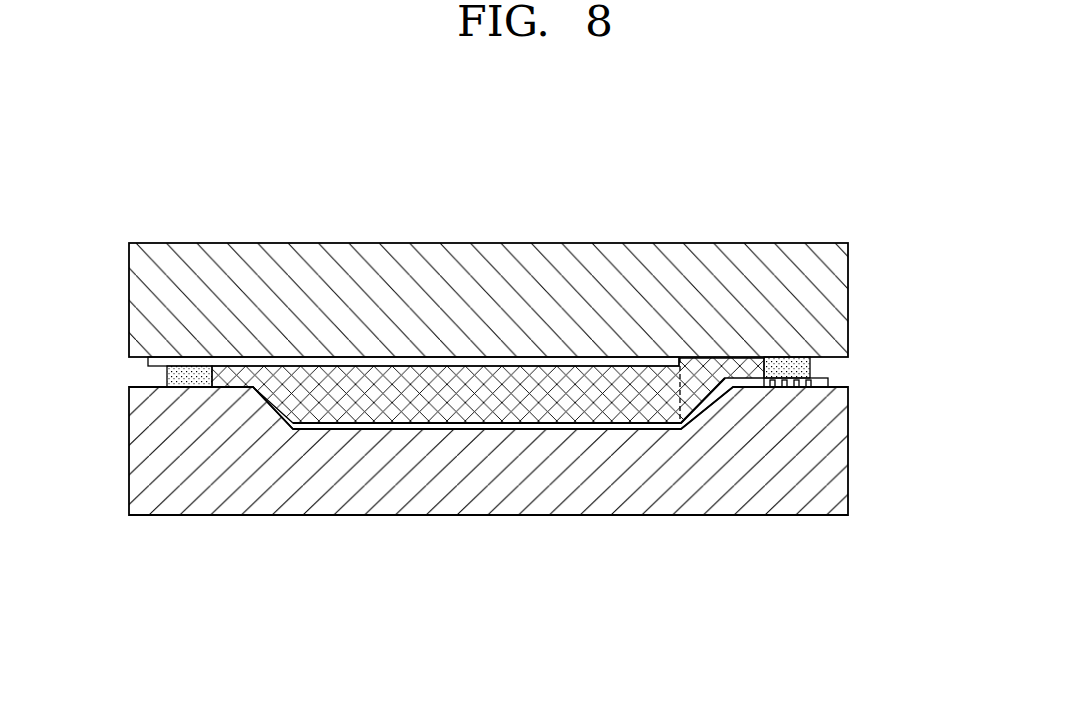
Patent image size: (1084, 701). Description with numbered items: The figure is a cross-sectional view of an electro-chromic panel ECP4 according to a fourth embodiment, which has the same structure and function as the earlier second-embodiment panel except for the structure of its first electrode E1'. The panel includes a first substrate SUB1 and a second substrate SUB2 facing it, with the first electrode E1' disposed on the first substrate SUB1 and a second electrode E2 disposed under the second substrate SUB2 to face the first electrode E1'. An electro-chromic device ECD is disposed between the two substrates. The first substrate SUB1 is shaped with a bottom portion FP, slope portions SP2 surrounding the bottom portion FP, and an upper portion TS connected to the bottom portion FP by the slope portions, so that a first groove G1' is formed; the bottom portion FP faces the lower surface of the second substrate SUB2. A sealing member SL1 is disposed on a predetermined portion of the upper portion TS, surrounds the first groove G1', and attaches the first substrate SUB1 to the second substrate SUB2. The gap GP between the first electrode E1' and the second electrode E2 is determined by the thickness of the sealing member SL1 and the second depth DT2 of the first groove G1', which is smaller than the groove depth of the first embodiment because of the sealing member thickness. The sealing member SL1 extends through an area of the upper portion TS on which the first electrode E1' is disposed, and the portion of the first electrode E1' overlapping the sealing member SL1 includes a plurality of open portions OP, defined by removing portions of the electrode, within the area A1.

The second substrate SUB2 is at (822, 300).
The first substrate SUB1 is at (832, 460).
The second electrode E2 is at (540, 360).
The first electrode E1' is at (509, 486).
The electro-chromic device ECD is at (450, 405).
The sealing member SL1 is at (165, 372).
The upper portion TS is at (830, 379).
The open portions OP is at (772, 388).
The second slope portion SP2 is at (268, 408).
The bottom portion FP is at (628, 430).
The first groove G1' is at (615, 281).
The electro-chromic panel ECP4 is at (737, 190).
The second depth DT2 is at (340, 387).
The gap GP is at (488, 366).
The area A1 is at (811, 387).